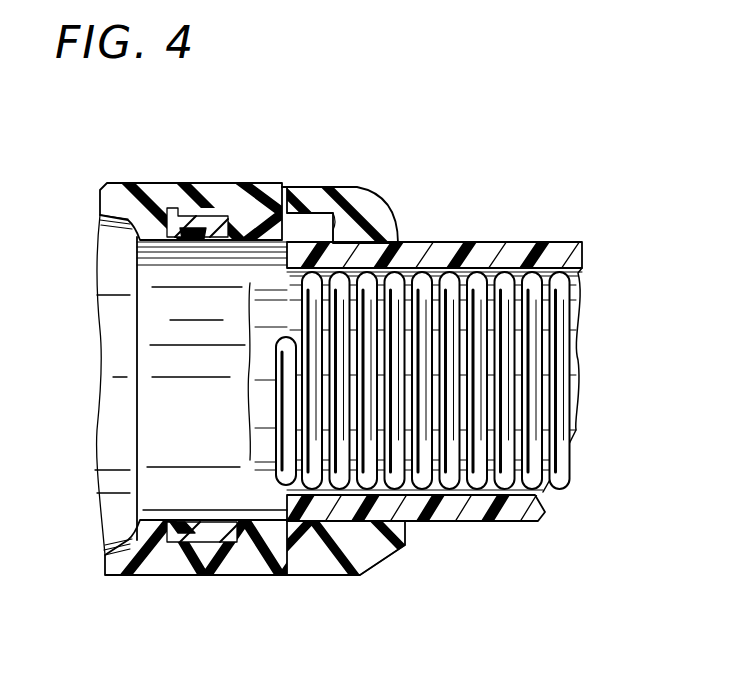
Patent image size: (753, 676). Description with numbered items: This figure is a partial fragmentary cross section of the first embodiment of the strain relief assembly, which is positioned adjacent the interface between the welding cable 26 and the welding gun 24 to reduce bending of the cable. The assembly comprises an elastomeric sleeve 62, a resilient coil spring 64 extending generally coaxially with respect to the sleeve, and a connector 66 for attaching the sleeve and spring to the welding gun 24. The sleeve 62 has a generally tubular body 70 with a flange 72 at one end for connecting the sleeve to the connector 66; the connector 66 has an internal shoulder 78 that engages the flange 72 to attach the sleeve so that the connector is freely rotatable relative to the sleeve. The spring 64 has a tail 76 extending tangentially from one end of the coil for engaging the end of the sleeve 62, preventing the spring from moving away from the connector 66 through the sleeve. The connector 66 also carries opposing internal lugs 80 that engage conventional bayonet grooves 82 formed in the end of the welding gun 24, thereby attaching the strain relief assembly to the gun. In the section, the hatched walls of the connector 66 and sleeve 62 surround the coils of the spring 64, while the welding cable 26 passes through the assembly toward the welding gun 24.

The welding gun 24 is at (121, 185).
The welding cable 26 is at (250, 367).
The elastomeric sleeve 62 is at (505, 246).
The resilient coil spring 64 is at (580, 346).
The connector 66 is at (268, 186).
The tubular body 70 is at (516, 525).
The flange 72 is at (344, 576).
The tail 76 is at (277, 341).
The internal shoulder 78 is at (330, 187).
The internal lugs 80 is at (218, 210).
The bayonet grooves 82 is at (197, 222).